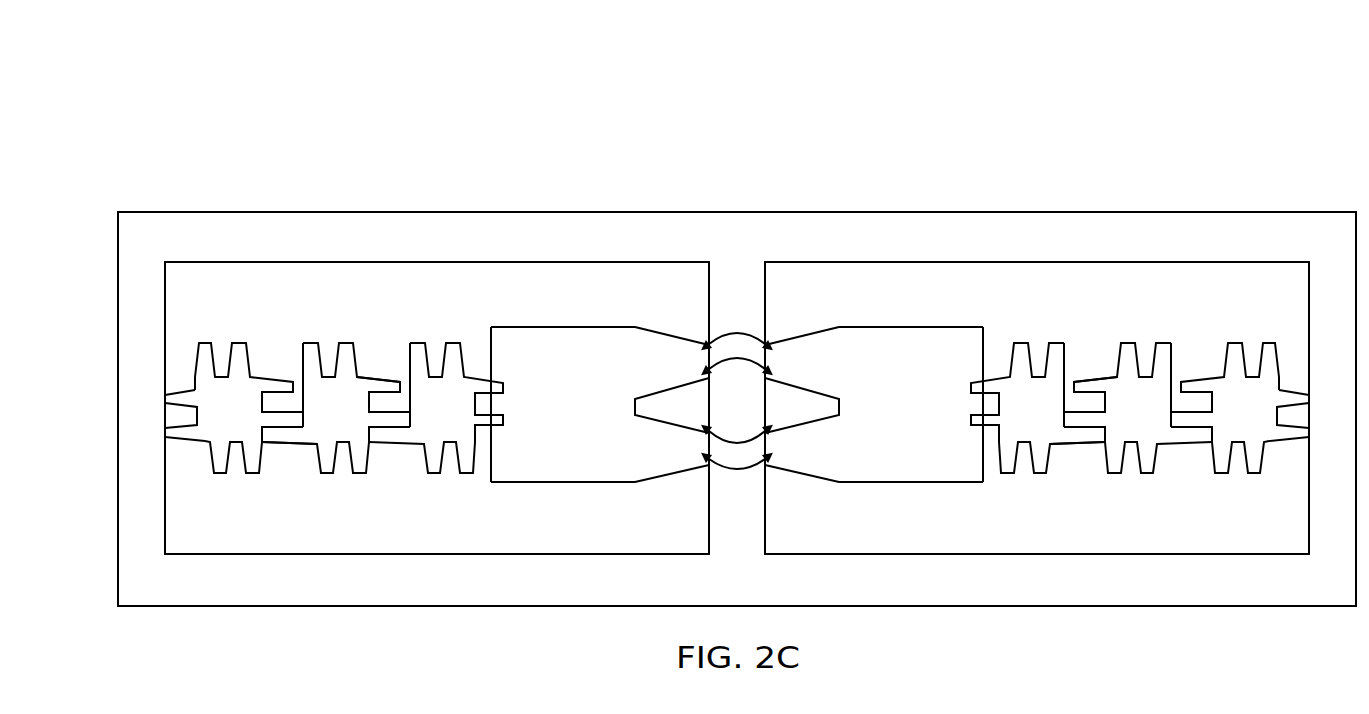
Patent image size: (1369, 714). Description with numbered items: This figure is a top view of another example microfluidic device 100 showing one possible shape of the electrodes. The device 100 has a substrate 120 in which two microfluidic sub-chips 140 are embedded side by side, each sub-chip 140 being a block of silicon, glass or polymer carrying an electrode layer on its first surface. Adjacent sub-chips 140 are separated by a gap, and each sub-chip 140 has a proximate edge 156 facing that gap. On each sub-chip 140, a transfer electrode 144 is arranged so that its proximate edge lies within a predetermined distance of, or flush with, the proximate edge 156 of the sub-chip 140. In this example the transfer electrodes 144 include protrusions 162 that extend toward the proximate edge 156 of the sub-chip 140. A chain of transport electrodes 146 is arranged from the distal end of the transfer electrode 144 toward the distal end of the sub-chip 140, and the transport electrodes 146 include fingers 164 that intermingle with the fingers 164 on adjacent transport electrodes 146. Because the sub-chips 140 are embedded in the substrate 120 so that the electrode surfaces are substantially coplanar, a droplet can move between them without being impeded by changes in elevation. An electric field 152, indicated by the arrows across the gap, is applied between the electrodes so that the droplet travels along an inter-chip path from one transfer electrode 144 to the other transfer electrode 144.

The microfluidic device 100 is at (186, 114).
The substrate 120 is at (118, 320).
The microfluidic sub-chip 140 is at (345, 262).
The transfer electrode 144 is at (555, 325).
The transport electrode 146 is at (312, 443).
The electric field 152 is at (731, 335).
The proximate edge of the microfluidic sub-chip 156 is at (710, 507).
The protrusion 162 is at (676, 338).
The finger 164 is at (375, 380).